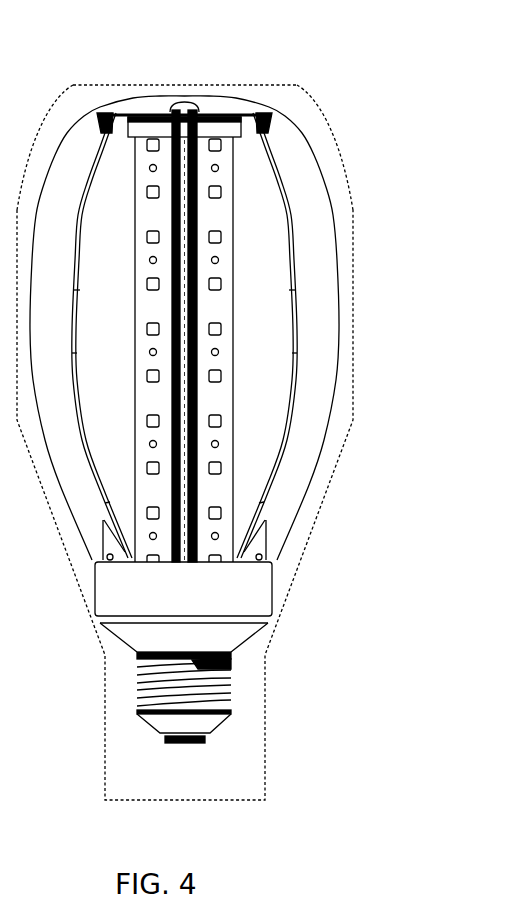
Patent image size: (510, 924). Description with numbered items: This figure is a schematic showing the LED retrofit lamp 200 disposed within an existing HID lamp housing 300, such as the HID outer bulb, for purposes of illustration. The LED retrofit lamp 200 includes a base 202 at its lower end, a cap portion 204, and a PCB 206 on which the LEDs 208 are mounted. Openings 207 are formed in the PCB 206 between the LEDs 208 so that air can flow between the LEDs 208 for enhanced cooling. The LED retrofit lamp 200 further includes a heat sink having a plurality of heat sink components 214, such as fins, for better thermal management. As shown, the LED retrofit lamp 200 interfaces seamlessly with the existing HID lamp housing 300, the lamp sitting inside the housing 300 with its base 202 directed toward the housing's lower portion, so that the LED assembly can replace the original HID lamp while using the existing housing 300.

The LED retrofit lamp 200 is at (80, 106).
The base 202 is at (236, 687).
The cap portion 204 is at (250, 607).
The PCB 206 is at (222, 204).
The openings 207 is at (222, 444).
The LEDs 208 is at (219, 107).
The heat sink components 214 is at (352, 240).
The HID lamp housing 300 is at (290, 85).